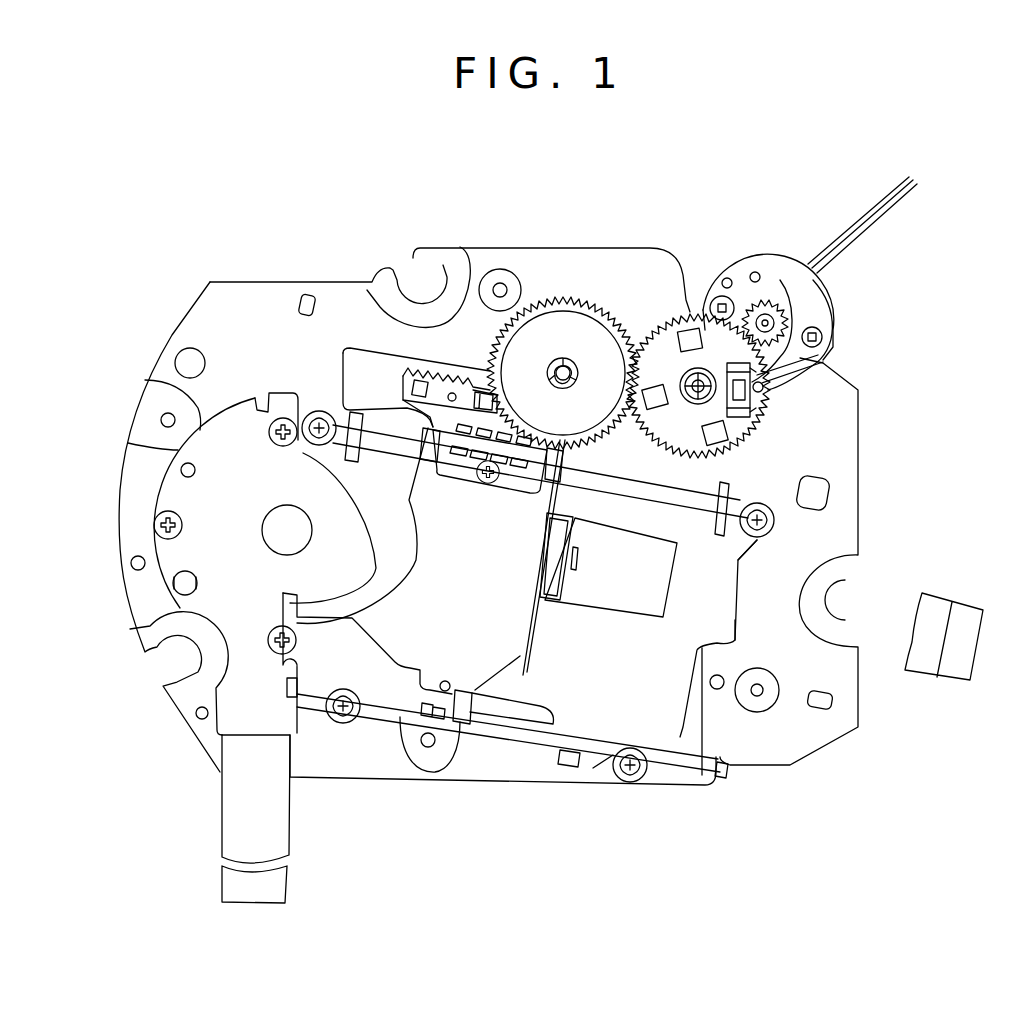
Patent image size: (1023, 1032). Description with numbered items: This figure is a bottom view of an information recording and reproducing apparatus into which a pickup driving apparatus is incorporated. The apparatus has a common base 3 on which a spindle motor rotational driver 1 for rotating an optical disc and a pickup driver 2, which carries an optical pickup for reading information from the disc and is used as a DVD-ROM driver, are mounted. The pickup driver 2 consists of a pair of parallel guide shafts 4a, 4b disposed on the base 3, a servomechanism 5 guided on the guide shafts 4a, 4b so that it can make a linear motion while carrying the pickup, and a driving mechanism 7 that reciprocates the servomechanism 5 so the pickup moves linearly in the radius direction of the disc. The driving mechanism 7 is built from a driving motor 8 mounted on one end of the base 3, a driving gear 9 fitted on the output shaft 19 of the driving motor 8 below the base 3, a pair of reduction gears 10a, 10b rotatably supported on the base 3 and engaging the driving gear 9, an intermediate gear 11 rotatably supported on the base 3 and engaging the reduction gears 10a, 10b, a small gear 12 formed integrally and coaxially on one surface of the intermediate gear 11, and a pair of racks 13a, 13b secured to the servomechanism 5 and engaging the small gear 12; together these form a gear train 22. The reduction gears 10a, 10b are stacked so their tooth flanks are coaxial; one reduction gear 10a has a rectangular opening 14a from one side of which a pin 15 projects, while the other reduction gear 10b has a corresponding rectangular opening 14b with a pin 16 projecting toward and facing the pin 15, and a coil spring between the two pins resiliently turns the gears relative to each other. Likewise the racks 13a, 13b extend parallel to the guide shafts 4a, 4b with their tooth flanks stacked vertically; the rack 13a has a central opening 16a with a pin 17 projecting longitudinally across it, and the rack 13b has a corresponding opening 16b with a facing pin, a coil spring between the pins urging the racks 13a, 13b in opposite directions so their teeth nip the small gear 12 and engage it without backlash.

The spindle motor rotational driver 1 is at (230, 372).
The pickup driver 2 is at (580, 305).
The common base 3 is at (333, 300).
The guide shaft 4a is at (574, 740).
The guide shaft 4b is at (693, 510).
The servomechanism 5 is at (513, 623).
The driving mechanism 7 is at (800, 333).
The driving motor 8 is at (810, 283).
The driving gear 9 is at (783, 323).
The reduction gear 10a is at (807, 386).
The reduction gear 10b is at (743, 427).
The intermediate gear 11 is at (595, 333).
The small gear 12 is at (538, 368).
The rack 13a is at (423, 291).
The rack 13b is at (438, 380).
The rectangular opening 14a is at (859, 375).
The rectangular opening 14b is at (743, 380).
The pin 15 is at (767, 263).
The pin 16 is at (742, 402).
The opening 16a is at (537, 285).
The opening 16b is at (482, 385).
The pin 17 is at (477, 393).
The output shaft 19 is at (777, 300).
The gear train 22 is at (747, 458).